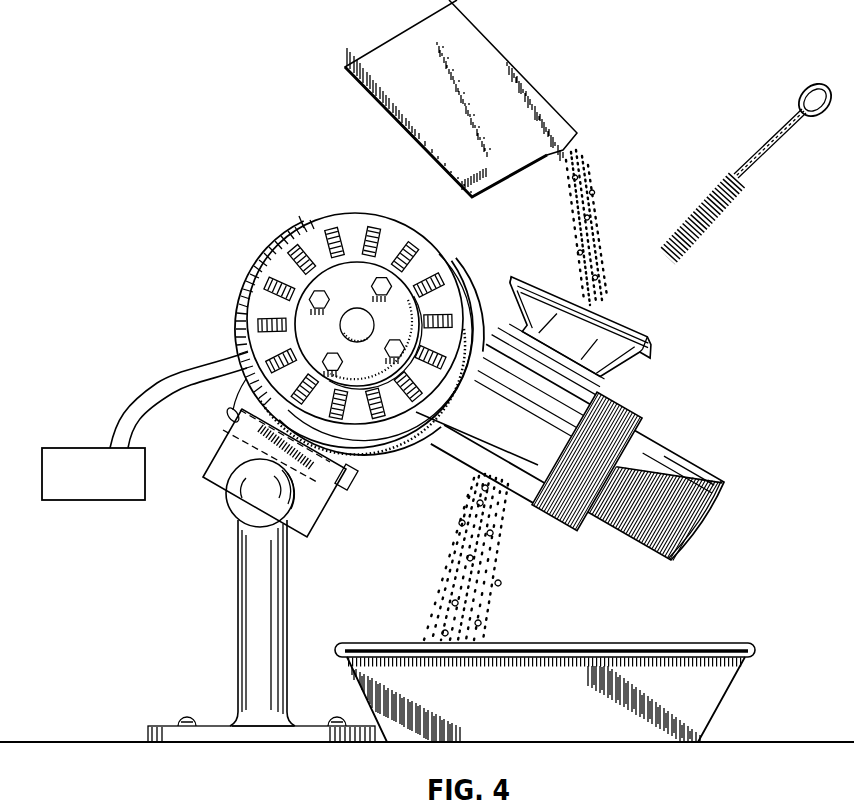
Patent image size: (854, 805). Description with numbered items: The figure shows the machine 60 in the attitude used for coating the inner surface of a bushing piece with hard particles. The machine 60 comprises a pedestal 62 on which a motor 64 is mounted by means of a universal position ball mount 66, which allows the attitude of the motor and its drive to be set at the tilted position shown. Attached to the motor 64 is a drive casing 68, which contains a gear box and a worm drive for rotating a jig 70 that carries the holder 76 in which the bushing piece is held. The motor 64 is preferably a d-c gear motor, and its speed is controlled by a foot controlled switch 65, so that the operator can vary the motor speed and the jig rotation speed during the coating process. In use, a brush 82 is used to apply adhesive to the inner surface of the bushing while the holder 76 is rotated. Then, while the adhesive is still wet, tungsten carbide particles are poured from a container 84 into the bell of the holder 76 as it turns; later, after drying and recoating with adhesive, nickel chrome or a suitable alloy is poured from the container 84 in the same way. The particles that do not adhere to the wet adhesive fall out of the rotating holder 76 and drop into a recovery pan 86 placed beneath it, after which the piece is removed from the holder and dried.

The machine 60 is at (226, 326).
The pedestal 62 is at (257, 608).
The motor 64 is at (350, 215).
The foot controlled switch 65 is at (82, 447).
The universal position ball mount 66 is at (251, 497).
The drive casing 68 is at (680, 532).
The jig 70 is at (614, 385).
The holder 76 is at (653, 348).
The brush 82 is at (778, 138).
The container 84 is at (507, 68).
The recovery pan 86 is at (723, 672).